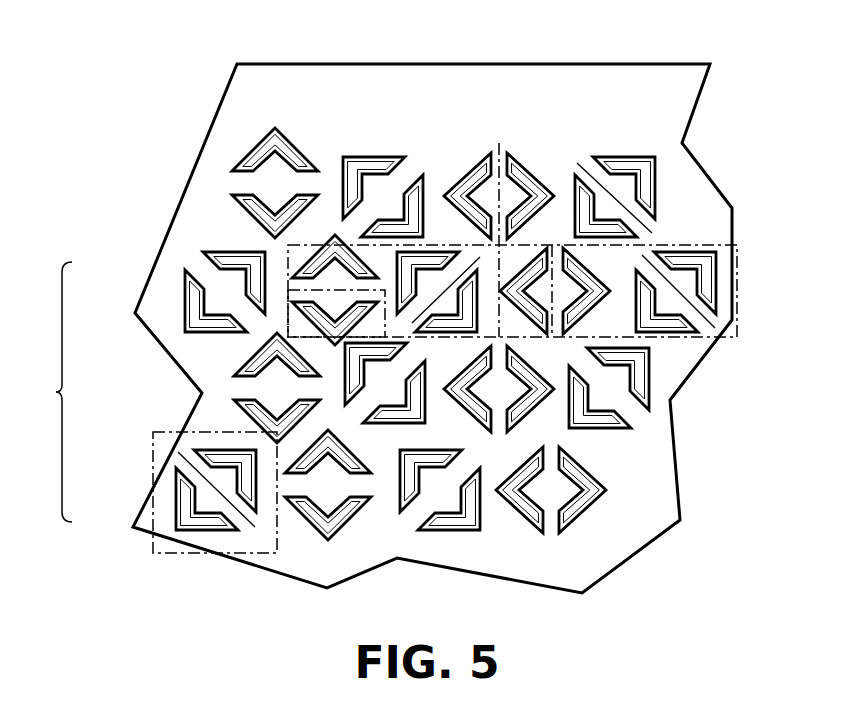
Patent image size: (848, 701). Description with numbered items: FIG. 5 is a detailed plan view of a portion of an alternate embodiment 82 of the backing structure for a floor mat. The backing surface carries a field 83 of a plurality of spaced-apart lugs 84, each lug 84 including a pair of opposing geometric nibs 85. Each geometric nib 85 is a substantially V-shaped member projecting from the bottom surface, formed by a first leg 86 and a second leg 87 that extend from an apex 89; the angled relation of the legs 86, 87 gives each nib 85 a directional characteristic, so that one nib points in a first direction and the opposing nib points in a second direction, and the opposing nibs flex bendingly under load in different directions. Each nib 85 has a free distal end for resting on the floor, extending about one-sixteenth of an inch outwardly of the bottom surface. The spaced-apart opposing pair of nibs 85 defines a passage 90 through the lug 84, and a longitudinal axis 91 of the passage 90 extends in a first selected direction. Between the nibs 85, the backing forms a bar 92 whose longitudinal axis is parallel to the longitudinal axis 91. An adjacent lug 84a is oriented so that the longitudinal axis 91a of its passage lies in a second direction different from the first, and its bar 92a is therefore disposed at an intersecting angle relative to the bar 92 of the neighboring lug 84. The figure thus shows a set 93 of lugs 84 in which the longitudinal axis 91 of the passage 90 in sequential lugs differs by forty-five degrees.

The alternate embodiment of the backing structure 82 is at (203, 232).
The field 83 is at (58, 392).
The lug 84 is at (668, 192).
The adjacent lug 84a is at (498, 128).
The geometric nib 85 is at (653, 175).
The first leg 86 is at (230, 455).
The second leg 87 is at (256, 478).
The apex 89 is at (262, 452).
The passage 90 is at (248, 517).
The longitudinal axis 91 is at (577, 163).
The longitudinal axis of passage of adjacent lug 91a is at (502, 147).
The bar 92 is at (618, 193).
The bar of adjacent lug 92a is at (493, 158).
The set of lugs 93 is at (732, 305).